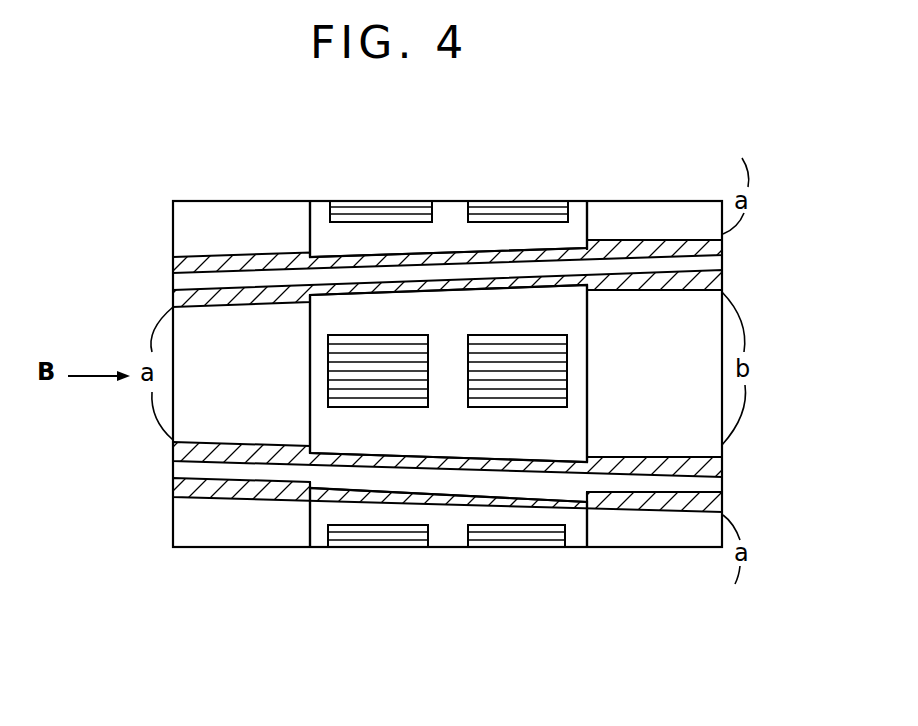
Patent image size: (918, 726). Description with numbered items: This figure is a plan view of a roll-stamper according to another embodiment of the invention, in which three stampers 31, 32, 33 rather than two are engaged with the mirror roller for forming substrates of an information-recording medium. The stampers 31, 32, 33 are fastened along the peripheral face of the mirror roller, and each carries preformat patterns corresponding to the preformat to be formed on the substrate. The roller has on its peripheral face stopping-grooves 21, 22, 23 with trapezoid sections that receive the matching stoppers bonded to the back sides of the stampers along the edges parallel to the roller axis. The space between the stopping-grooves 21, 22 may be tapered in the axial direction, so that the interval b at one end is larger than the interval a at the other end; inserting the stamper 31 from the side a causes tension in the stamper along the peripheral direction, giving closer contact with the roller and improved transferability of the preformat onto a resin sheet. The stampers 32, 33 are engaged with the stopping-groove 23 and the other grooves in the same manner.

The stopping-groove 21 is at (713, 280).
The stopping-groove 22 is at (718, 466).
The stopping-groove 23 is at (718, 503).
The stamper 31 is at (567, 322).
The stamper 32 is at (573, 537).
The stamper 33 is at (582, 223).